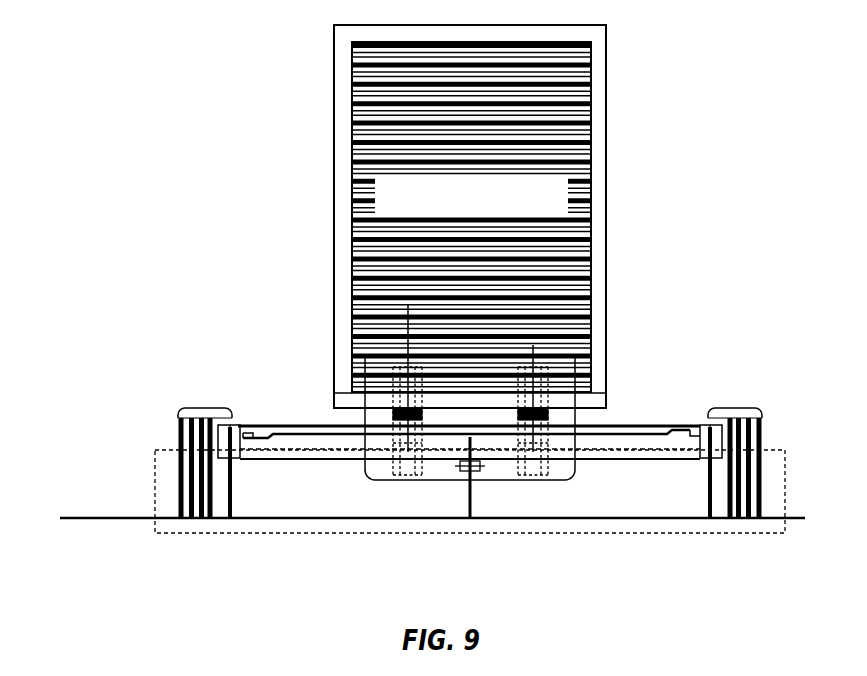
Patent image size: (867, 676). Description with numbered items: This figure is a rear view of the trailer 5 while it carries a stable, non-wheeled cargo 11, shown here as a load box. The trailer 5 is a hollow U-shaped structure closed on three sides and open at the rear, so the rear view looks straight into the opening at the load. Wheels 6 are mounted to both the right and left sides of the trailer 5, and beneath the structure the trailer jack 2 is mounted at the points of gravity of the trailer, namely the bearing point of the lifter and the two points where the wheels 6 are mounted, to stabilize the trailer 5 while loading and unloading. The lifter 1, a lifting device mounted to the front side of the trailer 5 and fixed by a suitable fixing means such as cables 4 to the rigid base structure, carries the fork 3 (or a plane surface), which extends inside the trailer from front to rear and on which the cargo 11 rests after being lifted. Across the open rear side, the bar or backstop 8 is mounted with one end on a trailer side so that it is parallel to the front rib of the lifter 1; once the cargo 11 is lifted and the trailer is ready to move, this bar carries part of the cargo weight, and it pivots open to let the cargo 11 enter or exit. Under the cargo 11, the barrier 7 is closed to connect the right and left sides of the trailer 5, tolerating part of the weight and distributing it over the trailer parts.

The lifter 1 is at (575, 353).
The trailer jack 2 is at (237, 490).
The fork 3 is at (518, 407).
The cables 4 is at (608, 393).
The trailer 5 is at (238, 427).
The wheels 6 is at (200, 418).
The barrier 7 is at (297, 430).
The bar (backstop) 8 is at (672, 427).
The cargo 11 is at (607, 292).